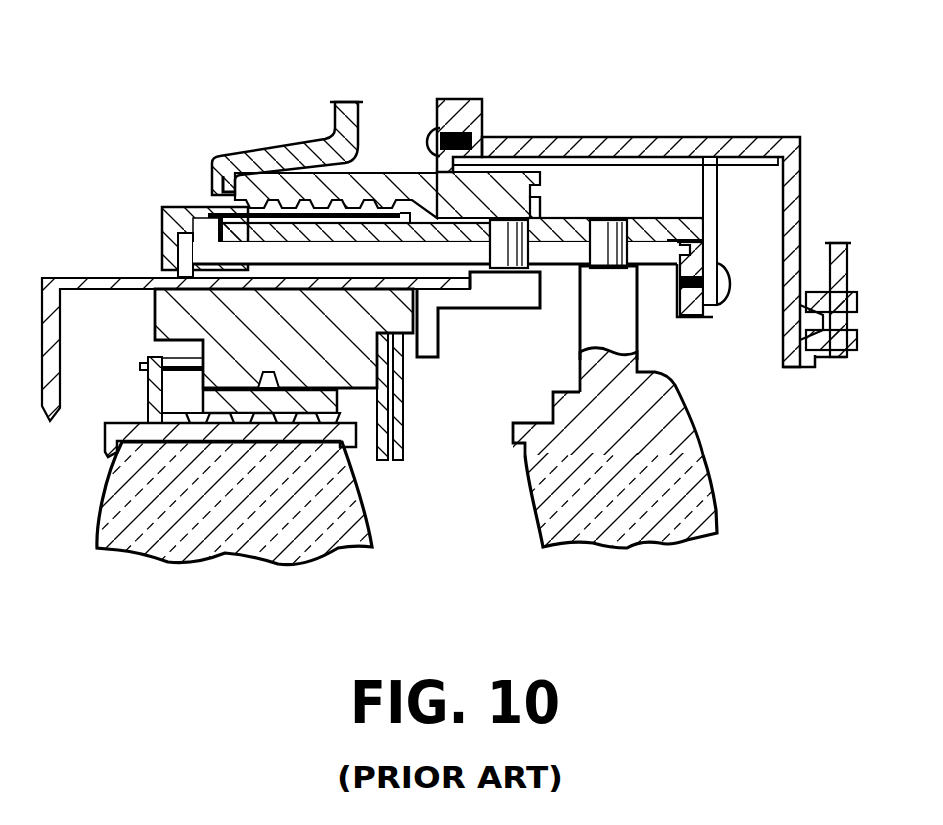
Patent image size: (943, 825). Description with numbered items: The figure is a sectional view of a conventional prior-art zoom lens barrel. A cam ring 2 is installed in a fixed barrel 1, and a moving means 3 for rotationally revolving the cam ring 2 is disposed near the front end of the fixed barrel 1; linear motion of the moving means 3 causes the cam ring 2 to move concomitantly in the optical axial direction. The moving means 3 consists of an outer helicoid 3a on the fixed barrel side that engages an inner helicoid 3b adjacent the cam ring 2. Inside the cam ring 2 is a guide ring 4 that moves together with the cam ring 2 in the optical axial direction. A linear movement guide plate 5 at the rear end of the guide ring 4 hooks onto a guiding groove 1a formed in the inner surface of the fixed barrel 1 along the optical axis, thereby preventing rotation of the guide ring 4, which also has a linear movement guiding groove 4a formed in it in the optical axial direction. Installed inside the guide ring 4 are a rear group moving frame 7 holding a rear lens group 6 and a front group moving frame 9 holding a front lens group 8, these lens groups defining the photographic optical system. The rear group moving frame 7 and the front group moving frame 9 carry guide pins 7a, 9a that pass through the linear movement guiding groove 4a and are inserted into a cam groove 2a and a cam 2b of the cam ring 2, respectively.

The fixed barrel 1 is at (458, 100).
The guiding groove 1a is at (682, 140).
The cam ring 2 is at (270, 232).
The cam groove 2a is at (608, 222).
The cam 2b is at (512, 220).
The moving means 3 is at (408, 136).
The outer helicoid 3a is at (370, 188).
The inner helicoid 3b is at (481, 212).
The guide ring 4 is at (175, 263).
The linear movement guiding groove 4a is at (260, 255).
The linear movement guide plate 5 is at (722, 178).
The rear lens group 6 is at (608, 548).
The rear group moving frame 7 is at (612, 396).
The guide pin 7a is at (608, 212).
The front lens group 8 is at (253, 545).
The front group moving frame 9 is at (108, 436).
The guide pin 9a is at (505, 250).